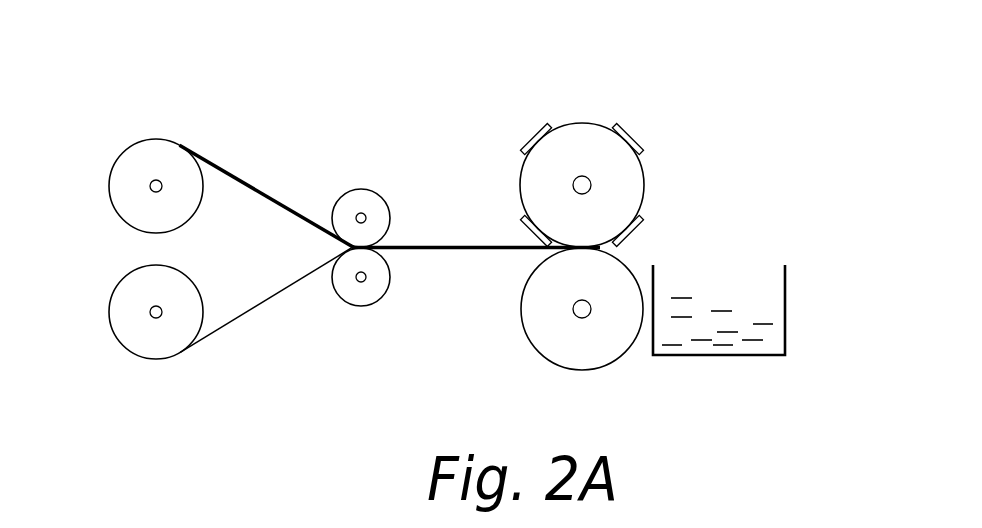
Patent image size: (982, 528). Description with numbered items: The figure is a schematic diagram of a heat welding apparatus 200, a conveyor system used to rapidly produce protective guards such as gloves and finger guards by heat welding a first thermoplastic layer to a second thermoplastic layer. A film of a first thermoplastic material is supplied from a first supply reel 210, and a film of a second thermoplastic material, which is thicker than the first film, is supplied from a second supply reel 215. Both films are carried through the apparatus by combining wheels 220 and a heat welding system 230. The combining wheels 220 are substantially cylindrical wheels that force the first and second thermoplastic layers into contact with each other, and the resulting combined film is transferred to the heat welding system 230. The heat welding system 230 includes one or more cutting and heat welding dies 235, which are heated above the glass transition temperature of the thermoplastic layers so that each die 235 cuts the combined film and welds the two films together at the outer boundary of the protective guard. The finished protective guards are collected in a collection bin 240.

The heat welding apparatus 200 is at (204, 103).
The first supply reel 210 is at (150, 300).
The second supply reel 215 is at (158, 163).
The combining wheels 220 is at (374, 177).
The heat welding system 230 is at (607, 100).
The cutting and heat welding die 235 is at (630, 136).
The collection bin 240 is at (775, 293).